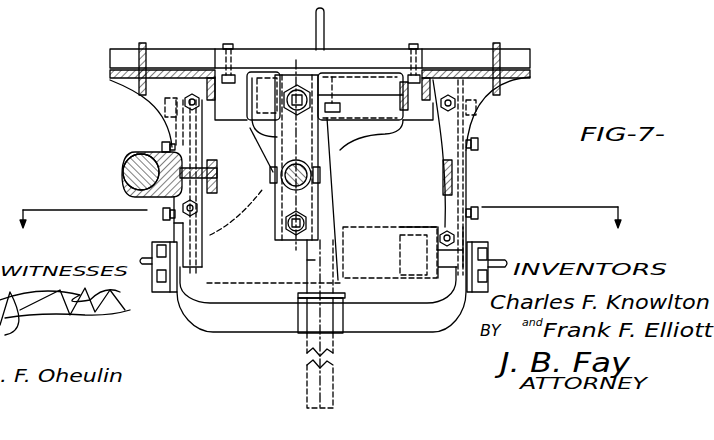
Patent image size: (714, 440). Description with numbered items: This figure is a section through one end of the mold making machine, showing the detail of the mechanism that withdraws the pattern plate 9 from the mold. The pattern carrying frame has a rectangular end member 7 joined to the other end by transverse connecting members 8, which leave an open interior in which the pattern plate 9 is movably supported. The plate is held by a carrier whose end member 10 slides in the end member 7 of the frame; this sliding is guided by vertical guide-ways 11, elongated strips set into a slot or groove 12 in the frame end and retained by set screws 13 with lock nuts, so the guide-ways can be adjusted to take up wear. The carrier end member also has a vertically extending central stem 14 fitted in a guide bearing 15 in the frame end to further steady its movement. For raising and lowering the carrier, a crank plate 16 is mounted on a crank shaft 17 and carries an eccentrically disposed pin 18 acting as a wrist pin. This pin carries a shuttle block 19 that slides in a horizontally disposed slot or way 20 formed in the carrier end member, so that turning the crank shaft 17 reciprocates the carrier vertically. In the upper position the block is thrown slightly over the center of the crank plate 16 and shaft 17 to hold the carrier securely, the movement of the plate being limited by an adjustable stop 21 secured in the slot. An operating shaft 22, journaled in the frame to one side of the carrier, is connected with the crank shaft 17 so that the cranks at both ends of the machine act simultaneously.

The end member 7 is at (197, 133).
The transverse connecting member 8 is at (542, 234).
The pattern plate 9 is at (284, 49).
The end member of the carrier 10 is at (249, 96).
The vertical guide-way 11 is at (200, 242).
The slot or groove 12 is at (455, 190).
The set screw 13 is at (166, 147).
The central stem 14 is at (310, 260).
The guide bearing 15 is at (337, 320).
The crank plate 16 is at (363, 105).
The crank shaft 17 is at (275, 170).
The eccentrically disposed pin 18 is at (305, 88).
The shuttle block 19 is at (287, 95).
The horizontally disposed slot or way 20 is at (338, 110).
The adjustable stop 21 is at (350, 107).
The shaft 22 is at (128, 172).